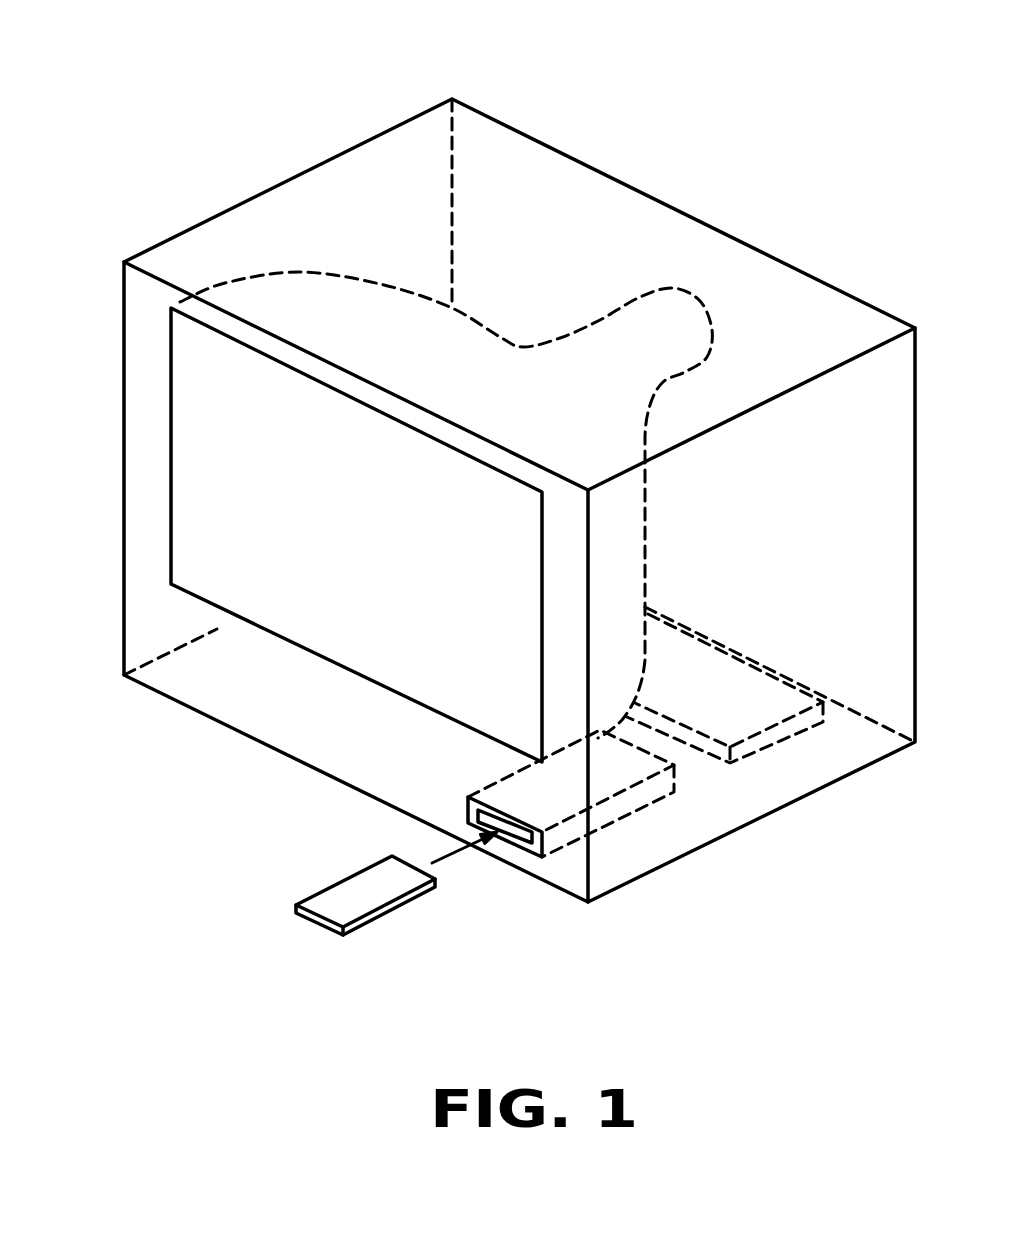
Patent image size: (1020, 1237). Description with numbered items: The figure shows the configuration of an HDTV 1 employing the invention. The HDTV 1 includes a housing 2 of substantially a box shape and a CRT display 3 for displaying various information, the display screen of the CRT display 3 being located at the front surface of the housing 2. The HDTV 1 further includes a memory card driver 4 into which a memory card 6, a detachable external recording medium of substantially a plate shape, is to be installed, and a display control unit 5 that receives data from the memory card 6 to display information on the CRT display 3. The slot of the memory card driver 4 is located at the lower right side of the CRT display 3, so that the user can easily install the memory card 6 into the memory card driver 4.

The HDTV 1 is at (262, 108).
The housing 2 is at (645, 195).
The CRT display 3 is at (195, 447).
The memory card driver 4 is at (515, 838).
The display control unit 5 is at (718, 670).
The memory card 6 is at (387, 893).